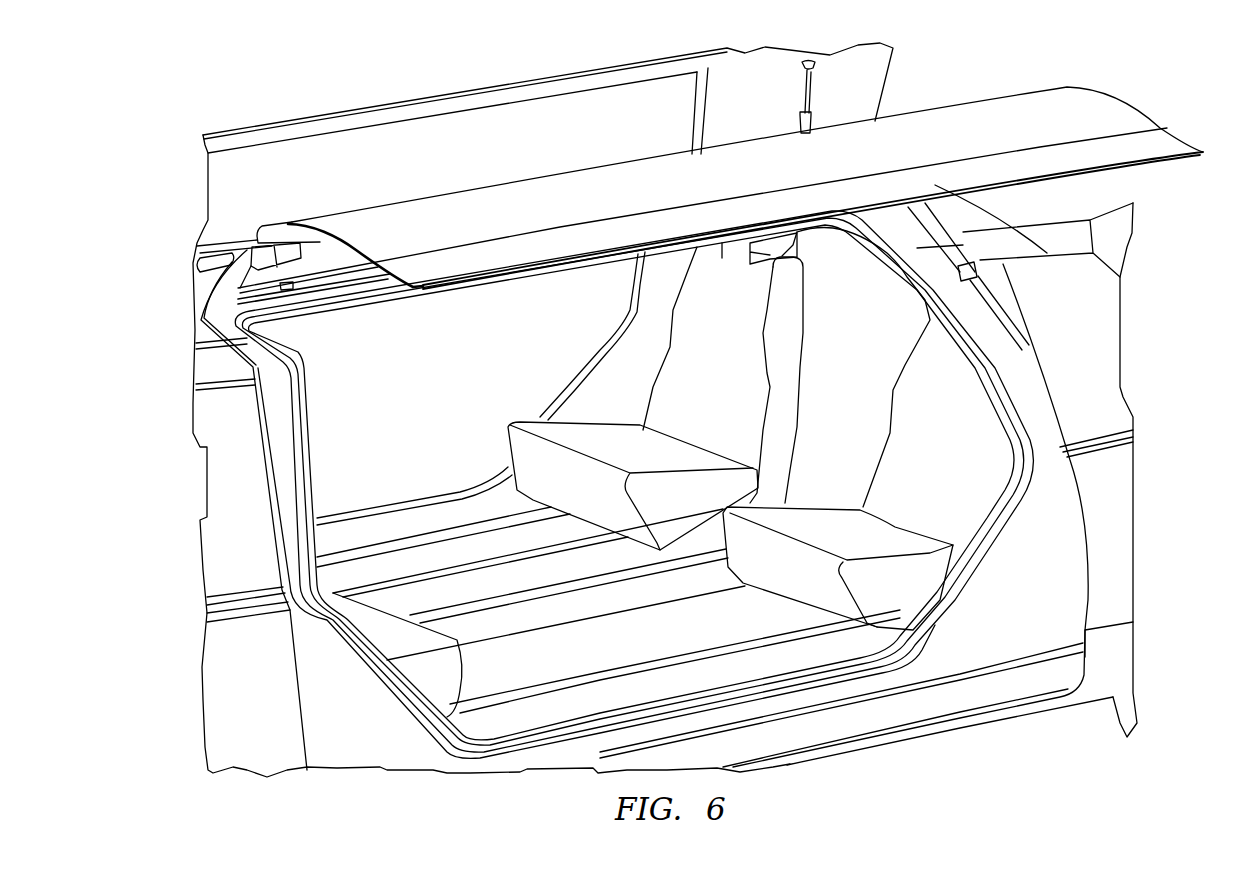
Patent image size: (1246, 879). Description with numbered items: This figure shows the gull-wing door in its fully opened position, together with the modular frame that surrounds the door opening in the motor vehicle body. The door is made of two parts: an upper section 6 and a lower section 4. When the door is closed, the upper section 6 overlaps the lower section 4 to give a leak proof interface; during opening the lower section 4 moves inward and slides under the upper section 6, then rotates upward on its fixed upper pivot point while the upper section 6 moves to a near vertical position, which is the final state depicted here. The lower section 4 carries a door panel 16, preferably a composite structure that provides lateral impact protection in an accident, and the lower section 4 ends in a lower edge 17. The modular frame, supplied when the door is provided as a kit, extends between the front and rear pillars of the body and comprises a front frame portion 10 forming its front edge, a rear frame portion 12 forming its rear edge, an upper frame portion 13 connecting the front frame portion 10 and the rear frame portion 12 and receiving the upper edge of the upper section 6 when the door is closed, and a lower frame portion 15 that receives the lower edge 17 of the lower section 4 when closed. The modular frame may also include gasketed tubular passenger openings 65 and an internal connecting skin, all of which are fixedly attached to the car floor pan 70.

The upper section 6 is at (297, 148).
The door panel 16 is at (548, 199).
The lower section 4 is at (457, 263).
The lower edge 17 is at (517, 274).
The upper frame portion 13 is at (343, 280).
The front frame portion 10 is at (280, 462).
The gasketed tubular passenger openings 65 is at (945, 583).
The lower frame portion 15 is at (945, 666).
The rear frame portion 12 is at (1017, 387).
The car floor pan 70 is at (747, 627).